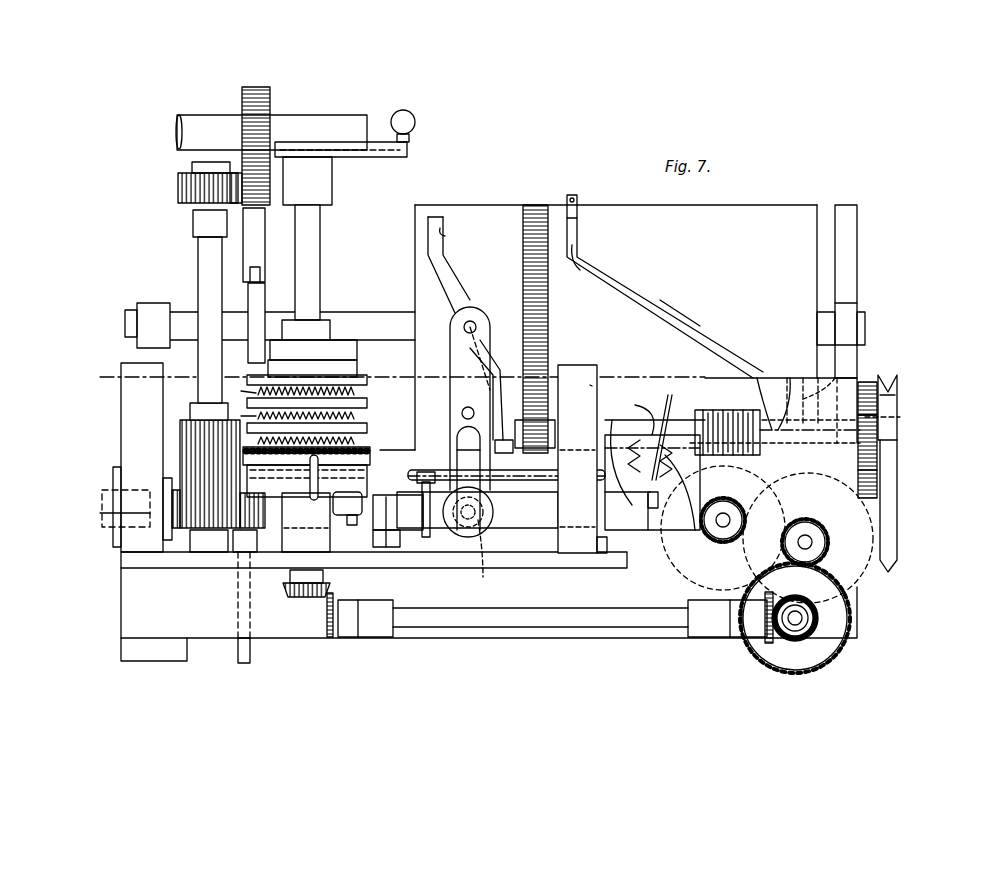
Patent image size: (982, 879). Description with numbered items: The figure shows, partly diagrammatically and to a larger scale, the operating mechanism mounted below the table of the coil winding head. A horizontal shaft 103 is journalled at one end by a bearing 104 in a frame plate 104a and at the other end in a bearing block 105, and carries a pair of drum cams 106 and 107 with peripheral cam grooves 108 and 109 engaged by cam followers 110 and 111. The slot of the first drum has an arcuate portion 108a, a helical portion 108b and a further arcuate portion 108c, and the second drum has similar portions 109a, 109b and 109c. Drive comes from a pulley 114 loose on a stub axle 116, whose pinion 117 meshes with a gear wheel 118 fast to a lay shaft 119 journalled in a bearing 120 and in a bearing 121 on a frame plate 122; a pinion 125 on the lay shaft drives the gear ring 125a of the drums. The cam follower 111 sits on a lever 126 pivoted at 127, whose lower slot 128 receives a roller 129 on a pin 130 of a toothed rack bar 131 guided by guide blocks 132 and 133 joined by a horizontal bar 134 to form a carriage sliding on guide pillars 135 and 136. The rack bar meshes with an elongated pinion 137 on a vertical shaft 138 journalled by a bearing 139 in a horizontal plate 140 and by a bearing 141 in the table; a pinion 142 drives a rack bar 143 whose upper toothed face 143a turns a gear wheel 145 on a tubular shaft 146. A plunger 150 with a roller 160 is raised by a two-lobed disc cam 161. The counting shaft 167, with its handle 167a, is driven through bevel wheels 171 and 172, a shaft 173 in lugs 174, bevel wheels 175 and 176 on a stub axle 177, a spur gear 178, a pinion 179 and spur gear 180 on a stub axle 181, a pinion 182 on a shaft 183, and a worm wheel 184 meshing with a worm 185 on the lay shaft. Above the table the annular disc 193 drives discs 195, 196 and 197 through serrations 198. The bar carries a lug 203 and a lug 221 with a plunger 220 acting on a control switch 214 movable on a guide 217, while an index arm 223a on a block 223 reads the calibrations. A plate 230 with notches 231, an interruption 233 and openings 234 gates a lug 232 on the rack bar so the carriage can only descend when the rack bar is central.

The horizontal shaft 103 is at (128, 312).
The bearing 104 is at (853, 308).
The frame plate 104a is at (857, 254).
The bearing block 105 is at (147, 310).
The drum cam 106 is at (762, 312).
The drum cam 107 is at (503, 312).
The cam groove 108 is at (580, 226).
The arcuate portion of cam slot 108a is at (577, 256).
The helical portion of cam slot 108b is at (655, 308).
The arcuate portion of cam slot 108c is at (862, 364).
The cam groove 109 is at (437, 205).
The arcuate portion of cam slot 109a is at (446, 236).
The helical portion of cam slot 109b is at (452, 280).
The arcuate portion of cam slot 109c is at (512, 455).
The cam follower 110 is at (585, 197).
The cam follower 111 is at (415, 302).
The pulley 114 is at (898, 525).
The stub axle 116 is at (878, 462).
The pinion 117 is at (878, 488).
The gear wheel 118 is at (878, 397).
The lay shaft 119 is at (770, 378).
The bearing 120 is at (900, 418).
The bearing 121 is at (590, 385).
The frame plate 122 is at (722, 378).
The pinion 125 is at (548, 408).
The gear ring 125a is at (528, 206).
The lever 126 is at (450, 360).
The pivot 127 is at (462, 410).
The slot 128 is at (457, 445).
The roller 129 is at (492, 560).
The pin 130 is at (492, 512).
The toothed rack bar 131 is at (548, 586).
The guide block 132 is at (116, 540).
The guide block 133 is at (614, 548).
The horizontal bar 134 is at (535, 492).
The guide pillar 135 is at (121, 390).
The guide pillar 136 is at (586, 370).
The elongated pinion 137 is at (183, 441).
The vertical shaft 138 is at (198, 252).
The bearing 139 is at (203, 548).
The horizontal plate 140 is at (209, 566).
The bearing 141 is at (193, 221).
The pinion 142 is at (178, 186).
The rack bar 143 is at (222, 178).
The upper toothed face 143a is at (248, 180).
The gear wheel 145 is at (270, 108).
The tubular shaft 146 is at (186, 120).
The plunger 150 is at (262, 245).
The roller 160 is at (258, 280).
The two-lobed disc cam 161 is at (250, 300).
The upper part of counting shaft 167 is at (314, 220).
The handle 167a is at (410, 150).
The bevel wheel 171 is at (298, 598).
The bevel wheel 172 is at (327, 620).
The shaft 173 is at (540, 630).
The lug 174 is at (706, 630).
The bevel wheel 175 is at (765, 615).
The bevel wheel 176 is at (820, 622).
The stub axle 177 is at (795, 610).
The spur gear 178 is at (840, 655).
The pinion 179 is at (815, 532).
The spur gear 180 is at (862, 563).
The stub axle 181 is at (806, 535).
The pinion 182 is at (740, 500).
The shaft 183 is at (722, 527).
The worm wheel 184 is at (723, 536).
The worm 185 is at (736, 408).
The annular disc 193 is at (360, 460).
The annular disc 195 is at (367, 430).
The annular disc 196 is at (367, 404).
The annular disc 197 is at (364, 376).
The serrations 198 is at (358, 390).
The lug 203 is at (283, 455).
The control switch 214 is at (395, 540).
The guide 217 is at (386, 550).
The plunger 220 is at (430, 535).
The lug 221 is at (506, 465).
The block 223 is at (340, 515).
The index arm 223a is at (306, 522).
The plate 230 is at (745, 452).
The notches 231 is at (650, 483).
The lug 232 is at (650, 505).
The interruption 233 is at (645, 425).
The openings 234 is at (674, 433).